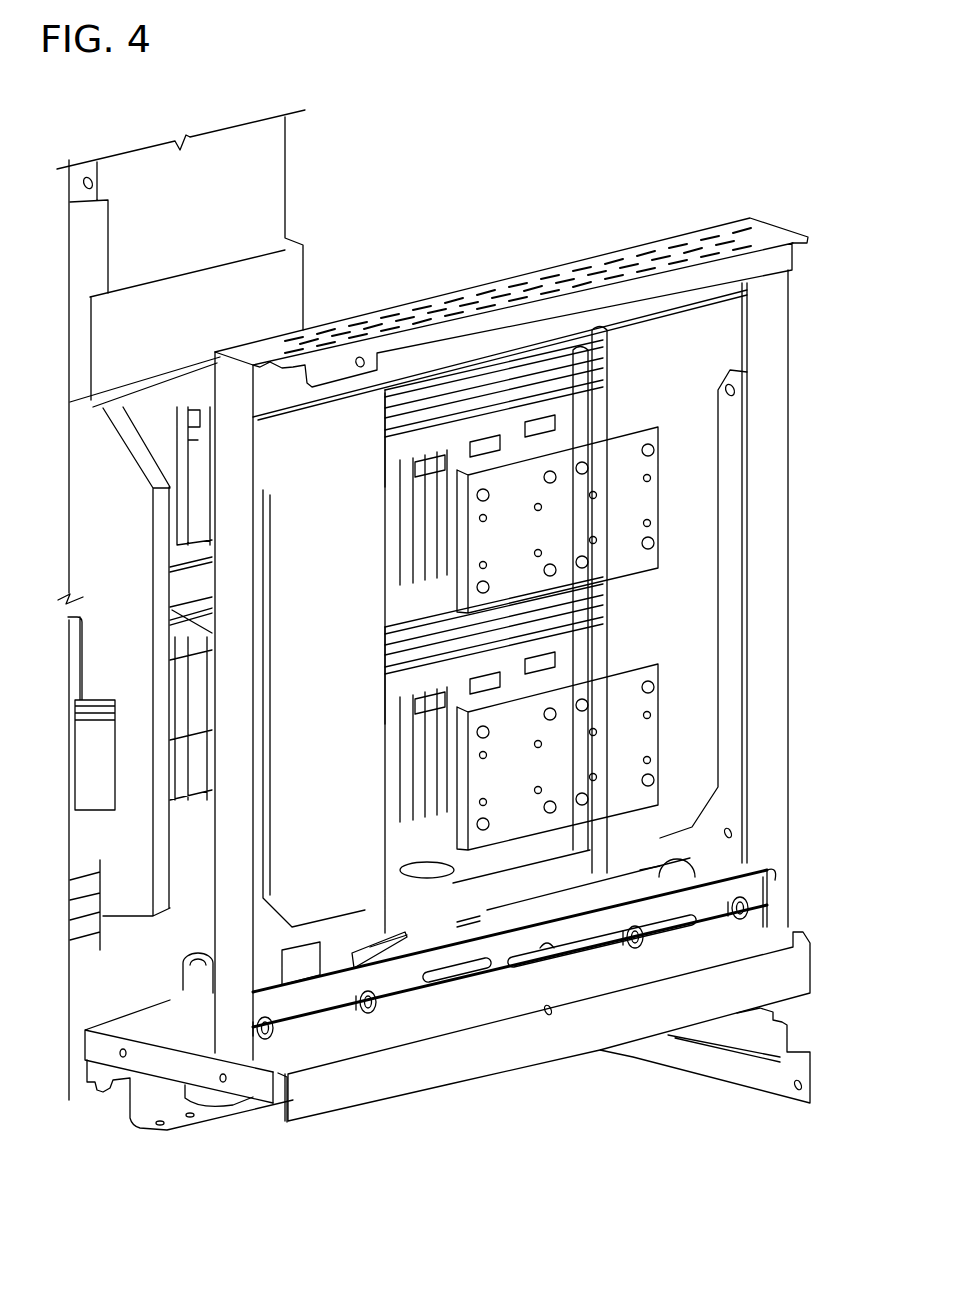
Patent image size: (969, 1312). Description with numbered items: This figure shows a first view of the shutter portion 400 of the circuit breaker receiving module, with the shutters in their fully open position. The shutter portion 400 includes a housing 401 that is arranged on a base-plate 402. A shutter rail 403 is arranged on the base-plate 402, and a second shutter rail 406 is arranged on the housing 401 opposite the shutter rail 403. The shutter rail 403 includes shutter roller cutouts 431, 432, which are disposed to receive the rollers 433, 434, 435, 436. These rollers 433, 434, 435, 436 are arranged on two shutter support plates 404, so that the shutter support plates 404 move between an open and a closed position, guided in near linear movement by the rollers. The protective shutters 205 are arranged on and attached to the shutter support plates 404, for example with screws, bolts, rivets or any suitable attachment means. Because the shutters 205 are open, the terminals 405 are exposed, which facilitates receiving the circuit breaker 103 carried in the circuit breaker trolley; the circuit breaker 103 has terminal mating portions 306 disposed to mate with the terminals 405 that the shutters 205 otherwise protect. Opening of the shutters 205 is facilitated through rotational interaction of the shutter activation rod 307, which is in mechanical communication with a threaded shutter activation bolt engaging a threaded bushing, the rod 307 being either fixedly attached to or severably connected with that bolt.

The shutter portion 400 is at (690, 183).
The housing 401 is at (520, 292).
The second shutter rail 406 is at (642, 305).
The circuit breaker 103 is at (130, 548).
The protective shutters 205 is at (325, 660).
The terminals 405 is at (540, 538).
The terminal mating portions 306 is at (430, 645).
The shutter support plates 404 is at (357, 948).
The shutter rail 403 is at (510, 1010).
The base-plate 402 is at (468, 1070).
The shutter activation rod 307 is at (190, 975).
The shutter roller cutout 431 is at (447, 970).
The shutter roller cutout 432 is at (547, 945).
The roller 433 is at (372, 1012).
The roller 434 is at (275, 1040).
The roller 435 is at (635, 948).
The roller 436 is at (757, 912).